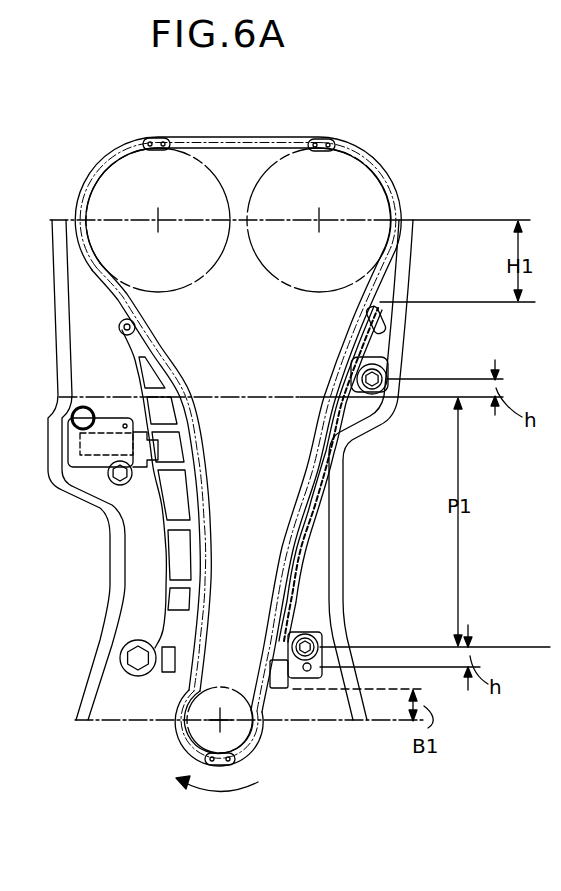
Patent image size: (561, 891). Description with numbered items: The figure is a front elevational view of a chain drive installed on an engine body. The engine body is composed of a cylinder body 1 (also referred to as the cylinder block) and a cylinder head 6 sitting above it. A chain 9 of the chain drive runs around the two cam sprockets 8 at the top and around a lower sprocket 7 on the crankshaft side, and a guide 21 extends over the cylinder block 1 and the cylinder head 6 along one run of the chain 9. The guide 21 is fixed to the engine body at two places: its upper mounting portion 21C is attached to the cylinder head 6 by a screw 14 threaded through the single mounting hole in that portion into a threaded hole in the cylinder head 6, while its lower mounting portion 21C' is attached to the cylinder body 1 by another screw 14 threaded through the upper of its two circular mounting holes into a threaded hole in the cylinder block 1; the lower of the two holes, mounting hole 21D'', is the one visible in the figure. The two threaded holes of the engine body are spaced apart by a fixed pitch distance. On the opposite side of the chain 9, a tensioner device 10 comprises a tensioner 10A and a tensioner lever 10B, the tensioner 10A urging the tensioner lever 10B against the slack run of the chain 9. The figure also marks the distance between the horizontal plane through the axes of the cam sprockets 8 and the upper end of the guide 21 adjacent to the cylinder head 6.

The cylinder body 1 is at (85, 662).
The cylinder head 6 is at (425, 250).
The crankshaft sprocket 7 is at (237, 733).
The cam sprockets 8 is at (179, 168).
The chain 9 is at (372, 157).
The tensioner device 10 is at (45, 448).
The tensioner 10A is at (95, 468).
The tensioner lever 10B is at (163, 567).
The screw 14 is at (378, 365).
The guide 21 is at (302, 542).
The upper mounting portion 21C is at (384, 425).
The lower mounting portion 21C' is at (349, 722).
The circular mounting hole 21D'' is at (326, 734).